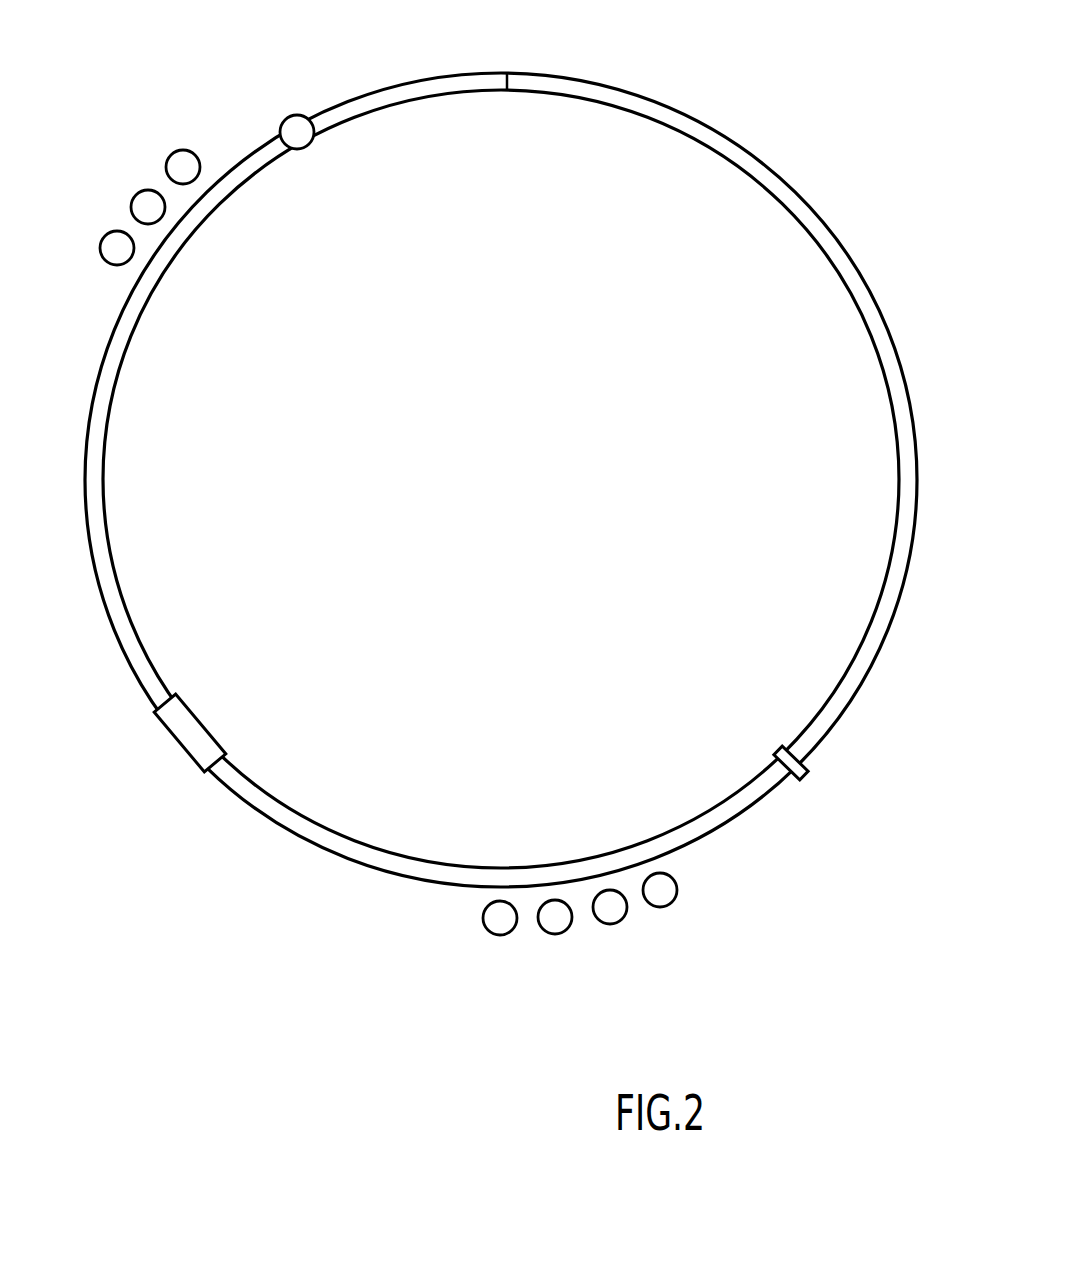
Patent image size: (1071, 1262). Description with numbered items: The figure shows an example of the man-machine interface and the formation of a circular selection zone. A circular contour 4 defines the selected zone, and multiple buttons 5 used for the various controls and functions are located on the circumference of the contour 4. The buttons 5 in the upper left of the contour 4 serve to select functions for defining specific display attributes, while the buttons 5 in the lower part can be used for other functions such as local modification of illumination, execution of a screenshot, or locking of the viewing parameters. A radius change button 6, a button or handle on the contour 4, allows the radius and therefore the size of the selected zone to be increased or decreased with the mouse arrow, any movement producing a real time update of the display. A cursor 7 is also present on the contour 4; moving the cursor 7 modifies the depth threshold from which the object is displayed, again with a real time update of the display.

The contour 4 is at (676, 128).
The button 5 is at (172, 150).
The radius change button 6 is at (172, 737).
The cursor 7 is at (763, 782).